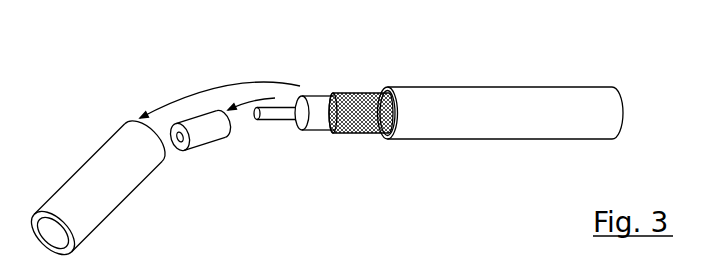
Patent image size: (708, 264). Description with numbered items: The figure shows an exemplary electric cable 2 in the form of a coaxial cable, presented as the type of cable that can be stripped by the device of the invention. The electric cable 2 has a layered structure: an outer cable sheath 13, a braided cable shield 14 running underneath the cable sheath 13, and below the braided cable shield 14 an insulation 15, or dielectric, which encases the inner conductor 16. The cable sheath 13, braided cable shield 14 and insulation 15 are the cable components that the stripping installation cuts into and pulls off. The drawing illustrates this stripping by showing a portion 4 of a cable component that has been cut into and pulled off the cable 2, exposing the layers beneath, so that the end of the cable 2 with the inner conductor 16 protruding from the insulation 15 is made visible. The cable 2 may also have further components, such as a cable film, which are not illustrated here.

The electric cable 2 is at (536, 84).
The portion of a cable component 4 is at (73, 189).
The cable sheath 13 is at (610, 107).
The braided cable shield 14 is at (352, 100).
The insulation 15 is at (313, 124).
The inner conductor 16 is at (272, 122).